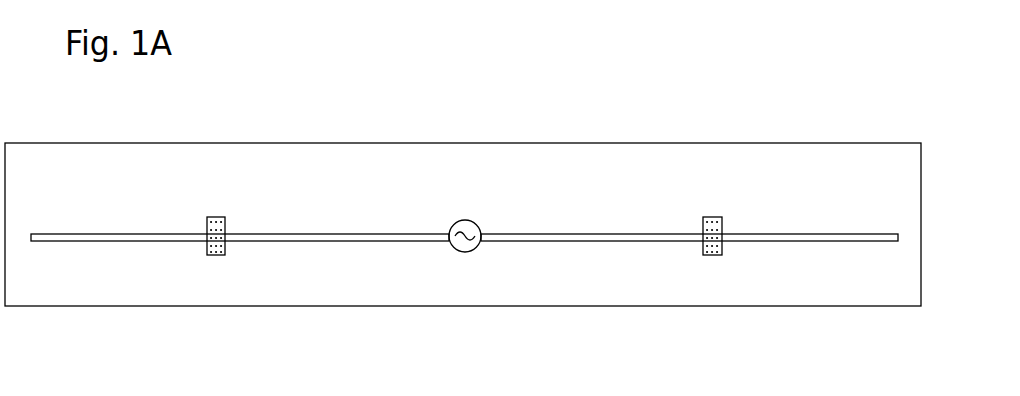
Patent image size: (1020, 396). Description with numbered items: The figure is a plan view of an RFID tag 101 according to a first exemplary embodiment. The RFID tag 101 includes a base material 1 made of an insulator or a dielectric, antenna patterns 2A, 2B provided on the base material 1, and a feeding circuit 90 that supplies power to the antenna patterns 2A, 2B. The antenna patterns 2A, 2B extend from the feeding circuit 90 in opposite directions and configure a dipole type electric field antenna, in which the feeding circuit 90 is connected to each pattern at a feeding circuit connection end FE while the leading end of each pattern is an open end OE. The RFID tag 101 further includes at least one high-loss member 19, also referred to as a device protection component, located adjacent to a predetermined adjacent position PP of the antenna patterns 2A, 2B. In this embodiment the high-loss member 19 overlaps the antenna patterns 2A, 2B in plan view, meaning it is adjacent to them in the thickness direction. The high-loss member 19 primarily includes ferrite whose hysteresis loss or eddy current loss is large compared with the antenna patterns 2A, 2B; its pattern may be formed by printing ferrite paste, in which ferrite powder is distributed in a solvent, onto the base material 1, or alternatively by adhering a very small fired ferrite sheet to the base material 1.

The RFID tag 101 is at (666, 98).
The base material 1 is at (530, 160).
The antenna pattern 2A is at (315, 234).
The antenna pattern 2B is at (617, 233).
The feeding circuit 90 is at (463, 252).
The high-loss member 19 is at (218, 255).
The adjacent position PP is at (235, 216).
The open end OE is at (31, 214).
The feeding circuit connection end FE is at (449, 213).